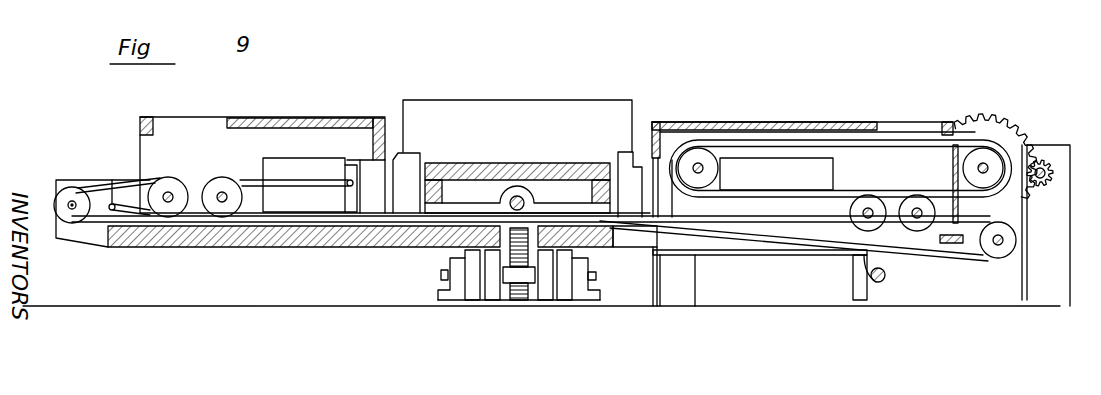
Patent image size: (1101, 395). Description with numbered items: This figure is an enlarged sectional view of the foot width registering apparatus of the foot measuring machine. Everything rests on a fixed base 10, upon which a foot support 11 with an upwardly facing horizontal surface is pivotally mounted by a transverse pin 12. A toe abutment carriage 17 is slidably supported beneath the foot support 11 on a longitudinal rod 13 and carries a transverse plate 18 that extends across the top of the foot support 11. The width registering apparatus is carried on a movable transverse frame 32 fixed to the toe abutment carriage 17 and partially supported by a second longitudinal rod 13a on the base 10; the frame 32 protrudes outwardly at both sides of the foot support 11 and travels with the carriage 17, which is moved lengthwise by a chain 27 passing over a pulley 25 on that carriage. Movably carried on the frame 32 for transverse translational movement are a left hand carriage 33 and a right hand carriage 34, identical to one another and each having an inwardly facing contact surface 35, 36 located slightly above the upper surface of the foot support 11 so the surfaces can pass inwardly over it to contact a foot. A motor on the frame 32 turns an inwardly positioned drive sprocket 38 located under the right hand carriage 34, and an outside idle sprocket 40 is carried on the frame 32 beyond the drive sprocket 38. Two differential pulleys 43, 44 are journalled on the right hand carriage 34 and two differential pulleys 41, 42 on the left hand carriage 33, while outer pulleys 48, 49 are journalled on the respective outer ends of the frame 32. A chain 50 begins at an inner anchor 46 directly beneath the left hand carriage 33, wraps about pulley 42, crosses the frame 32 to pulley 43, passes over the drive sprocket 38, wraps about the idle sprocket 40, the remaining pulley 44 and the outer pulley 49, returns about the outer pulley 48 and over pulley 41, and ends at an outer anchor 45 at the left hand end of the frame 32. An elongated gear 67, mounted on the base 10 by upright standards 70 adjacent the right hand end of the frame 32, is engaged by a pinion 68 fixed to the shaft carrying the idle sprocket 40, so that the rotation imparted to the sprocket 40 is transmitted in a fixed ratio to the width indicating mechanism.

The base 10 is at (258, 306).
The foot support 11 is at (512, 170).
The transverse pin 12 is at (597, 278).
The longitudinal rod 13 is at (523, 198).
The second longitudinal rod 13a is at (887, 277).
The toe abutment carriage 17 is at (471, 178).
The transverse plate 18 is at (521, 112).
The pulley 25 is at (522, 276).
The chain 27 is at (514, 290).
The transverse frame 32 is at (386, 248).
The left hand carriage 33 is at (136, 142).
The right hand carriage 34 is at (907, 118).
The contact surface 35 is at (398, 120).
The contact surface 36 is at (650, 129).
The drive sprocket 38 is at (712, 178).
The idle sprocket 40 is at (991, 165).
The differential pulley 41 is at (166, 160).
The differential pulley 42 is at (220, 160).
The differential pulley 43 is at (868, 172).
The differential pulley 44 is at (917, 172).
The outer anchor 45 is at (112, 182).
The inner anchor 46 is at (354, 184).
The outer pulley 48 is at (63, 207).
The outer pulley 49 is at (1006, 246).
The chain 50 is at (300, 178).
The elongated gear 67 is at (1043, 186).
The pinion 68 is at (1001, 121).
The upright standard 70 is at (688, 288).